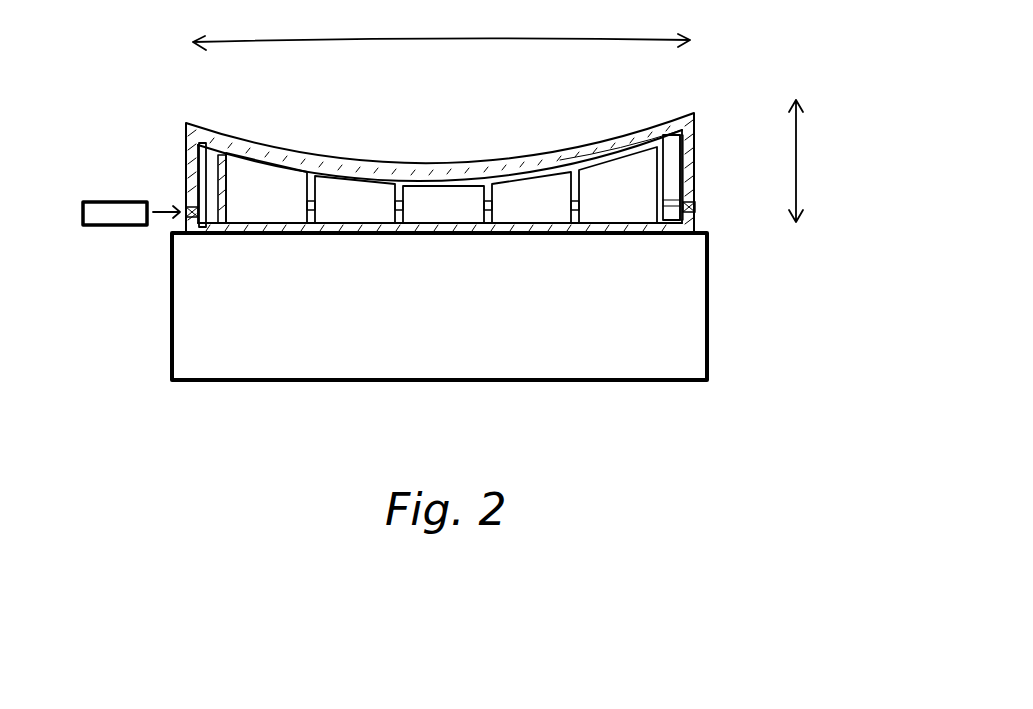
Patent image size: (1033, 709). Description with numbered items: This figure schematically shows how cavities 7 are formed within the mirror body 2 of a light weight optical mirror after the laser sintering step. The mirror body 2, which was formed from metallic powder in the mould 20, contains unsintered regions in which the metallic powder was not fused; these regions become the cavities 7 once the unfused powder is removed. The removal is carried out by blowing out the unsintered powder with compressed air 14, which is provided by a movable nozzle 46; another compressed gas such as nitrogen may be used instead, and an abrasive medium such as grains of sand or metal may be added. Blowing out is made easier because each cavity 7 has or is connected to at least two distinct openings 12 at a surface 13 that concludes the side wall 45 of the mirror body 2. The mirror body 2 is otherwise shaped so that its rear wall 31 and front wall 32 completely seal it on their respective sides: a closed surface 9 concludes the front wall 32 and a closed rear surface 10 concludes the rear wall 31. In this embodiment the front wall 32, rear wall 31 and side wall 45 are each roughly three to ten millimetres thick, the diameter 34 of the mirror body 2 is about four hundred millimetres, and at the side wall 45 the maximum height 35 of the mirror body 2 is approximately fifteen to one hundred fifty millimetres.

The mirror body 2 is at (690, 127).
The cavities 7 is at (272, 214).
The closed surface 9 is at (500, 166).
The closed rear surface 10 is at (444, 234).
The openings 12 is at (176, 238).
The surface 13 is at (203, 162).
The compressed air 14 is at (153, 212).
The mould 20 is at (663, 403).
The rear wall 31 is at (513, 228).
The front wall 32 is at (597, 150).
The diameter 34 is at (450, 42).
The maximum height 35 is at (795, 148).
The side wall 45 is at (197, 163).
The movable nozzle 46 is at (120, 202).